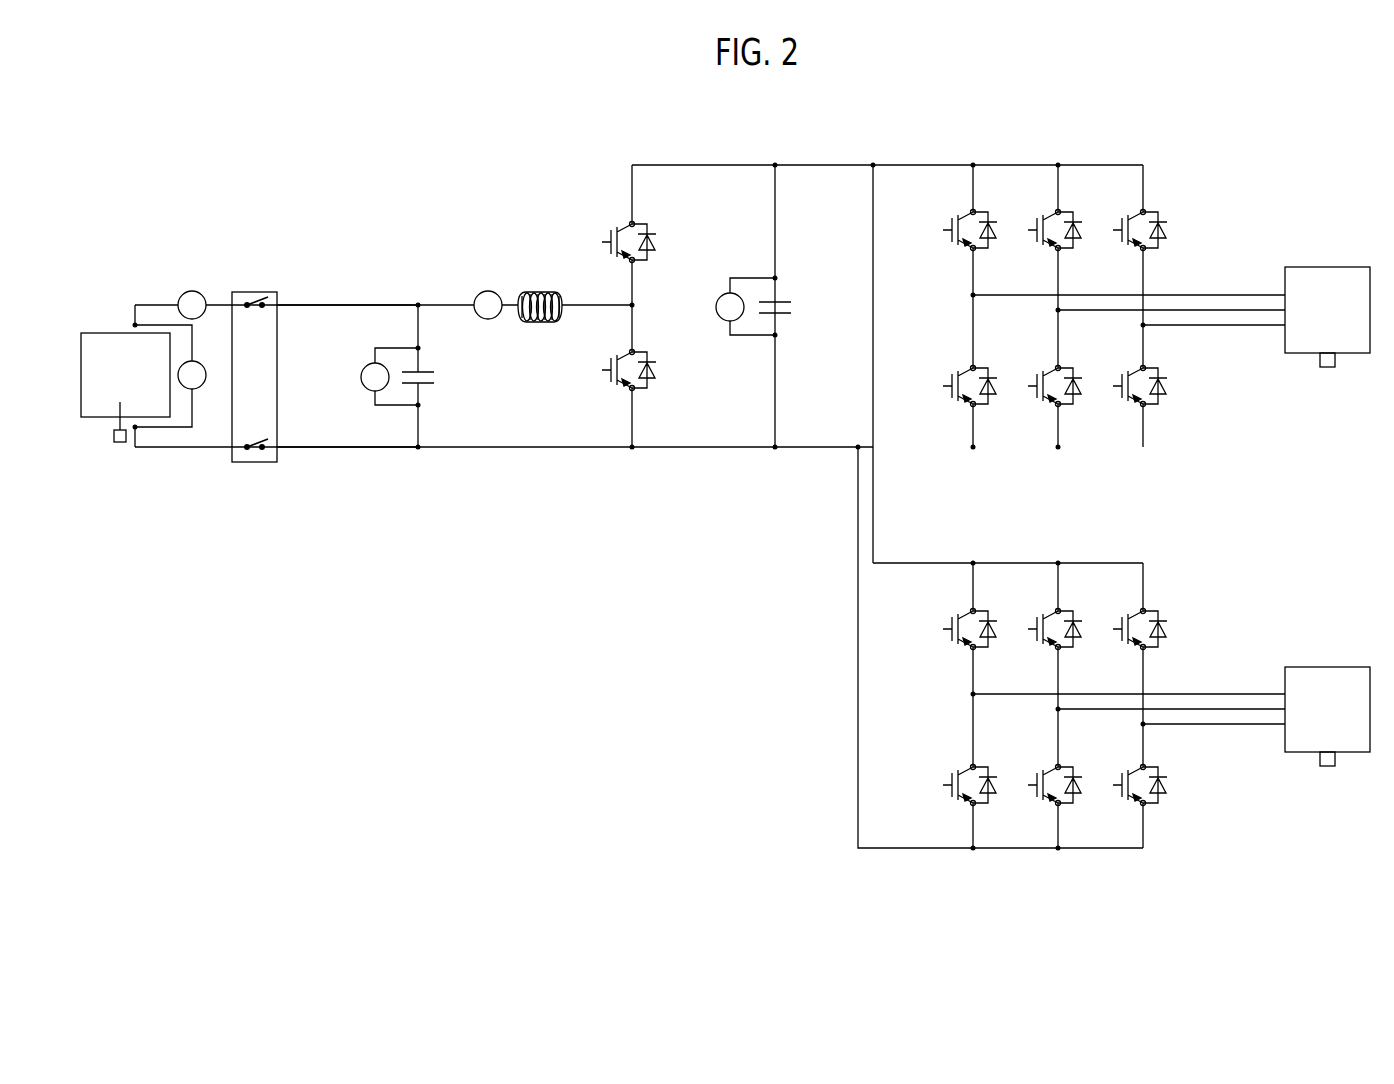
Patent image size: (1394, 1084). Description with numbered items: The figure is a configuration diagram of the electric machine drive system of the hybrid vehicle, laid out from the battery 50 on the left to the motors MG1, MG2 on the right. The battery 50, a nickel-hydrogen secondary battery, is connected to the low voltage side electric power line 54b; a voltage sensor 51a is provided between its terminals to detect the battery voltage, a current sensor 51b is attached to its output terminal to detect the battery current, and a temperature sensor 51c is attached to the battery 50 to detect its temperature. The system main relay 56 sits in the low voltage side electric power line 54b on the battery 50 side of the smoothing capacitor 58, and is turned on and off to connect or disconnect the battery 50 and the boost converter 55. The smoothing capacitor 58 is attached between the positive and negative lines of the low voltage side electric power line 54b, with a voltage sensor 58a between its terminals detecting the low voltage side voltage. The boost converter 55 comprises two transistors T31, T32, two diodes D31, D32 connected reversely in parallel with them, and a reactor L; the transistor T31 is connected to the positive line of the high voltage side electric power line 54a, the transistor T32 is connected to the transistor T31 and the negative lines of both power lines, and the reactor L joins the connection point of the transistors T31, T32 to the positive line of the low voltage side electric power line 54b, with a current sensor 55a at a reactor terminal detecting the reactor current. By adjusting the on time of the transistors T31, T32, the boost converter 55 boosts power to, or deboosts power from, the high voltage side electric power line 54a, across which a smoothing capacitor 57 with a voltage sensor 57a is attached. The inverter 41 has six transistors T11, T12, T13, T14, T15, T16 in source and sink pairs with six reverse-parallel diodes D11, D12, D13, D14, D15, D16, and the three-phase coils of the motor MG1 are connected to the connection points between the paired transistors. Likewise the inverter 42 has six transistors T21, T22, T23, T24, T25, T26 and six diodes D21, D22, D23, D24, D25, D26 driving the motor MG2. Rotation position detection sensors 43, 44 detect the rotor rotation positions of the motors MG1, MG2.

The battery 50 is at (121, 331).
The voltage sensor 51a is at (196, 389).
The current sensor 51b is at (191, 290).
The temperature sensor 51c is at (121, 444).
The system main relay 56 is at (254, 290).
The low voltage side electric power line 54b is at (322, 307).
The smoothing capacitor 58 is at (424, 370).
The voltage sensor 58a is at (371, 362).
The current sensor 55a is at (487, 290).
The reactor L is at (538, 291).
The boost converter 55 is at (597, 141).
The transistor T31 is at (611, 236).
The transistor T32 is at (611, 364).
The diode D31 is at (652, 252).
The diode D32 is at (652, 380).
The smoothing capacitor 57 is at (778, 297).
The voltage sensor 57a is at (728, 291).
The high voltage side electric power line 54a is at (847, 167).
The inverter 41 is at (1063, 144).
The inverter 42 is at (1063, 542).
The transistor T11 is at (952, 222).
The transistor T12 is at (1037, 222).
The transistor T13 is at (1122, 222).
The transistor T14 is at (952, 378).
The transistor T15 is at (1037, 378).
The transistor T16 is at (1122, 378).
The diode D11 is at (992, 241).
The diode D12 is at (1077, 241).
The diode D13 is at (1162, 241).
The diode D14 is at (992, 397).
The diode D15 is at (1077, 397).
The diode D16 is at (1162, 397).
The transistor T21 is at (952, 621).
The transistor T22 is at (1037, 621).
The transistor T23 is at (1122, 621).
The transistor T24 is at (952, 777).
The transistor T25 is at (1037, 777).
The transistor T26 is at (1122, 777).
The diode D21 is at (992, 640).
The diode D22 is at (1077, 640).
The diode D23 is at (1162, 640).
The diode D24 is at (992, 796).
The diode D25 is at (1077, 796).
The diode D26 is at (1162, 796).
The motor MG1 is at (1320, 266).
The motor MG2 is at (1320, 666).
The rotation position detection sensor 43 is at (1328, 369).
The rotation position detection sensor 44 is at (1328, 768).